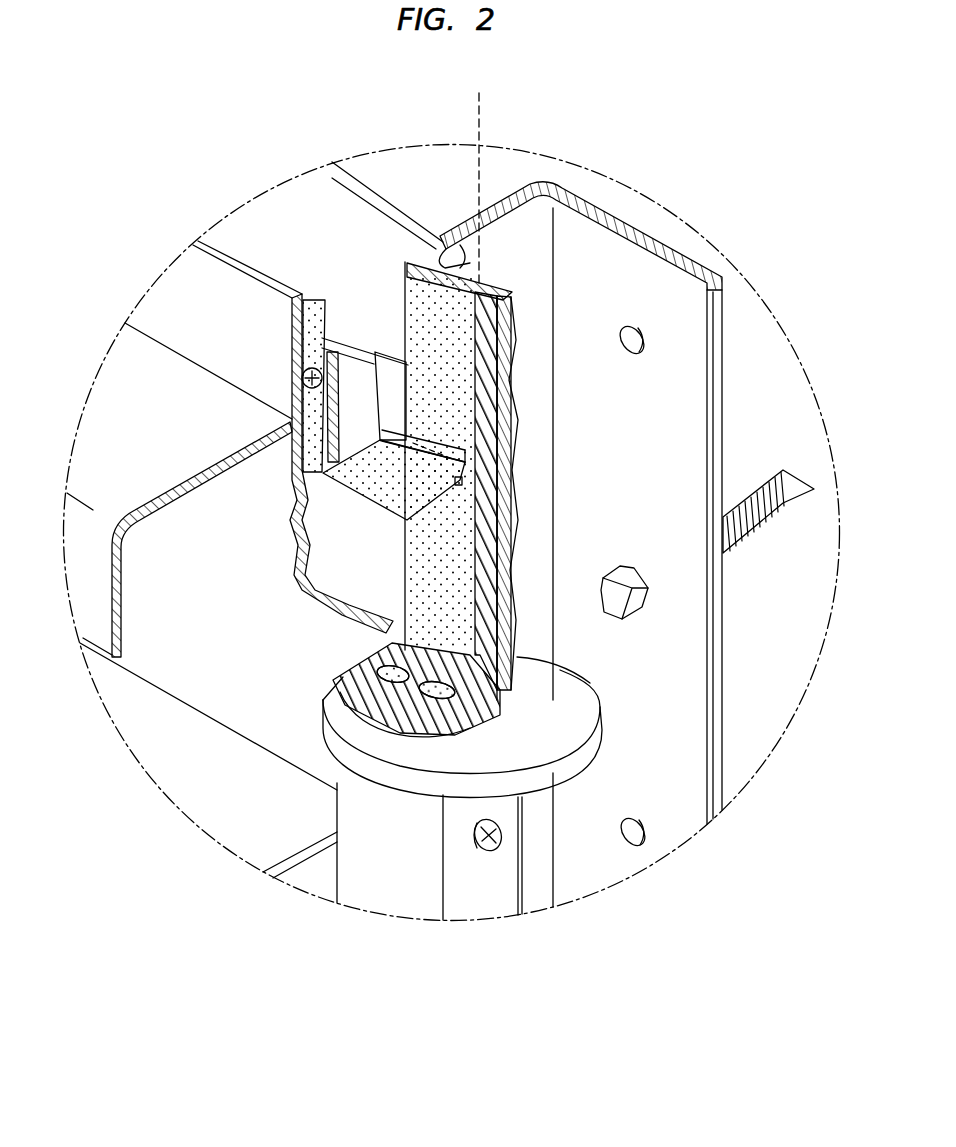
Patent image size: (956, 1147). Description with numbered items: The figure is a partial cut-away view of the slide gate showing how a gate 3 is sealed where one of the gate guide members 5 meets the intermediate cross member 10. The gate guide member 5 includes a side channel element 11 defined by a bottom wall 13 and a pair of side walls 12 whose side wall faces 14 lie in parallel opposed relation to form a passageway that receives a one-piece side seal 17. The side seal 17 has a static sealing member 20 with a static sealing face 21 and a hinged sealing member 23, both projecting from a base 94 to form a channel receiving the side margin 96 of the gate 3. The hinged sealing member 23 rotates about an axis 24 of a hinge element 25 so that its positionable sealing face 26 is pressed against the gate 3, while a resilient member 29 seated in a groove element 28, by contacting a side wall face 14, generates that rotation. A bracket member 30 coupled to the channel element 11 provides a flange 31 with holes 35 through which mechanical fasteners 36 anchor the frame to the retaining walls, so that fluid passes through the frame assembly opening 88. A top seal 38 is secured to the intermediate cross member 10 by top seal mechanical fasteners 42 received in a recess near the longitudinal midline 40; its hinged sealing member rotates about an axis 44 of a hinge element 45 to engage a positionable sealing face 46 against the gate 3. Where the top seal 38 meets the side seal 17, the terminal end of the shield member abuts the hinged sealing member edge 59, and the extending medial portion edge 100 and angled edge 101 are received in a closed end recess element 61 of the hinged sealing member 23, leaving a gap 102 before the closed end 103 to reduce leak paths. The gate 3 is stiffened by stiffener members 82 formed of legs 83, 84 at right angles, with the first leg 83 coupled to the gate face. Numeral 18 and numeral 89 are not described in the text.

The gate 3 is at (184, 292).
The gate guide member 5 is at (481, 886).
The intermediate cross member 10 is at (359, 402).
The side channel element 11 is at (407, 877).
The side wall 12 is at (582, 750).
The bottom wall 13 is at (337, 763).
The side wall face 14 is at (327, 698).
The side seal 17 is at (368, 645).
The base plate 18 is at (600, 690).
The static sealing member 20 is at (417, 728).
The static sealing face 21 is at (460, 717).
The hinged sealing member 23 is at (408, 263).
The axis 24 is at (481, 114).
The hinge element 25 is at (503, 288).
The positionable sealing face 26 is at (410, 277).
The groove element 28 is at (427, 262).
The resilient member 29 is at (447, 262).
The bracket member 30 is at (524, 228).
The flange 31 is at (630, 270).
The hole 35 is at (637, 355).
The mechanical fastener 36 is at (757, 493).
The top seal 38 is at (362, 501).
The longitudinal midline 40 is at (518, 500).
The top seal mechanical fastener 42 is at (303, 370).
The axis 44 is at (510, 530).
The hinge element 45 is at (515, 522).
The positionable sealing face 46 is at (407, 487).
The hinged sealing member edge 59 is at (325, 478).
The closed end recess element 61 is at (444, 512).
The stiffener member 82 is at (120, 364).
The first leg 83 is at (104, 456).
The leg 84 is at (96, 597).
The frame assembly opening 88 is at (351, 587).
The screw 89 is at (503, 832).
The base 94 is at (487, 702).
The side margin 96 is at (525, 662).
The medial portion edge 100 is at (412, 422).
The angled edge 101 is at (417, 520).
The gap 102 is at (425, 505).
The closed end 103 is at (463, 482).